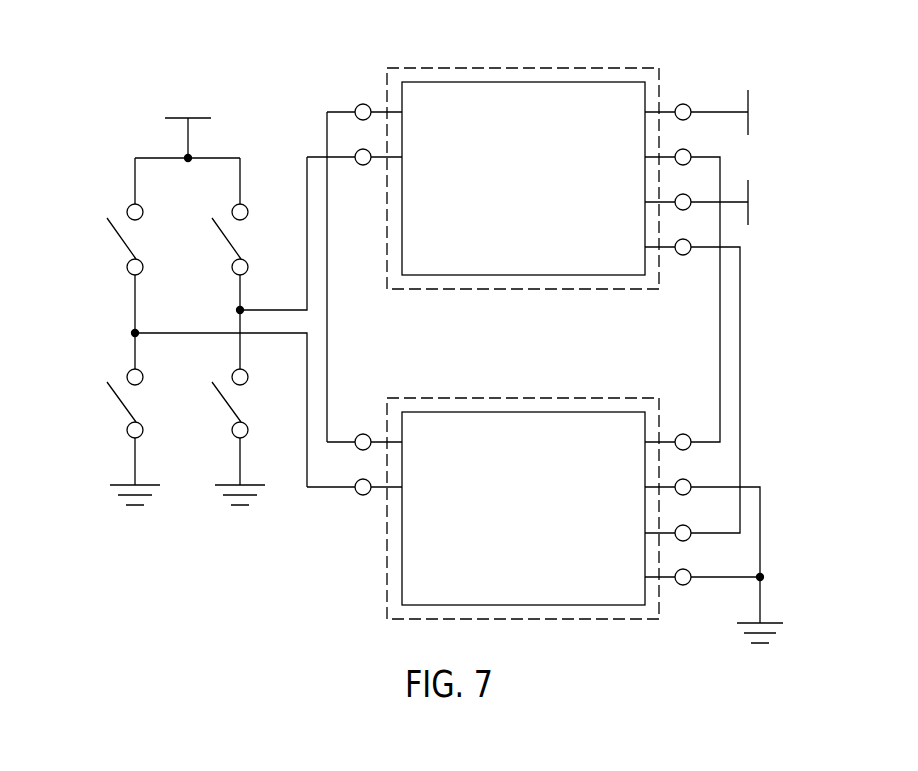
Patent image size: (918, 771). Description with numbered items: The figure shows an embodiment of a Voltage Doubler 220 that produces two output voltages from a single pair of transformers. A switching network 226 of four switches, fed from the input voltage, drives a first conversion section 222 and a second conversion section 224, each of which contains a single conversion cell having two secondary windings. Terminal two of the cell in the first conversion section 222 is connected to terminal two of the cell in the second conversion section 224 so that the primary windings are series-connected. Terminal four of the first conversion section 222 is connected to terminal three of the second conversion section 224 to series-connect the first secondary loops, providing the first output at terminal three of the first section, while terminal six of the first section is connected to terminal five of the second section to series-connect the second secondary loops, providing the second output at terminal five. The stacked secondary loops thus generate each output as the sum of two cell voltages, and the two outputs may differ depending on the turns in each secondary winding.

The Voltage Doubler 220 is at (147, 46).
The switching network 226 is at (147, 121).
The first conversion section 222 is at (522, 68).
The second conversion section 224 is at (522, 398).